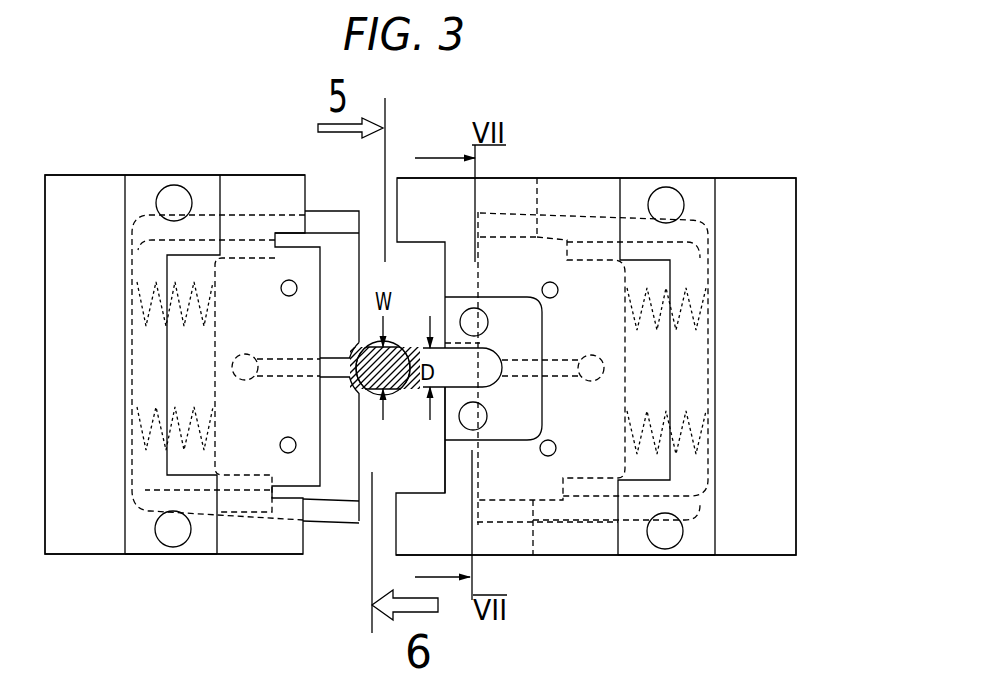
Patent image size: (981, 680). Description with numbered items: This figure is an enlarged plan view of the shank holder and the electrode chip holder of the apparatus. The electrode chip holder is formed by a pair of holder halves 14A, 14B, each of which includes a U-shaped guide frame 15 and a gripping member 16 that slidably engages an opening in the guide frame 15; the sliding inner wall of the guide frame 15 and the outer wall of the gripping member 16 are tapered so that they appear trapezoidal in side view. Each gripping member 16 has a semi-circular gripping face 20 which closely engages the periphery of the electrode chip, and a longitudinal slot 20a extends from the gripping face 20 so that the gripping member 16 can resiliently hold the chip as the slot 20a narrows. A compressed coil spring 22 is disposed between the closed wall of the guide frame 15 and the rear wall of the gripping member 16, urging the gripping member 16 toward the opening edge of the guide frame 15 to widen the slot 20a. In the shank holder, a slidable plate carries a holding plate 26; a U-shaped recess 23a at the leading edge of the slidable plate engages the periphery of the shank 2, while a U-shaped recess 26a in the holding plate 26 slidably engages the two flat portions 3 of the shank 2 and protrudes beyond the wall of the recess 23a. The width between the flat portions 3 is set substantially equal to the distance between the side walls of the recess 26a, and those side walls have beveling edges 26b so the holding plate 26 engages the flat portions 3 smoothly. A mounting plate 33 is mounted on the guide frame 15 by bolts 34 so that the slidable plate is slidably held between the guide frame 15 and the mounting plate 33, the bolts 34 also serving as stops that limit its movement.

The shank 2 is at (400, 380).
The flat portions 3 is at (388, 398).
The holder half 14A is at (810, 108).
The holder half 14B is at (125, 95).
The U-shaped guide frame 15 is at (100, 203).
The gripping member 16 is at (153, 235).
The semi-circular gripping face 20 is at (357, 337).
The longitudinal slot 20a is at (287, 358).
The compressed coil spring 22 is at (133, 450).
The U-shaped recess 23a is at (445, 398).
The holding plate 26 is at (515, 315).
The U-shaped recess 26a is at (462, 356).
The beveling edges 26b is at (443, 343).
The mounting plate 33 is at (137, 540).
The bolts 34 is at (175, 197).